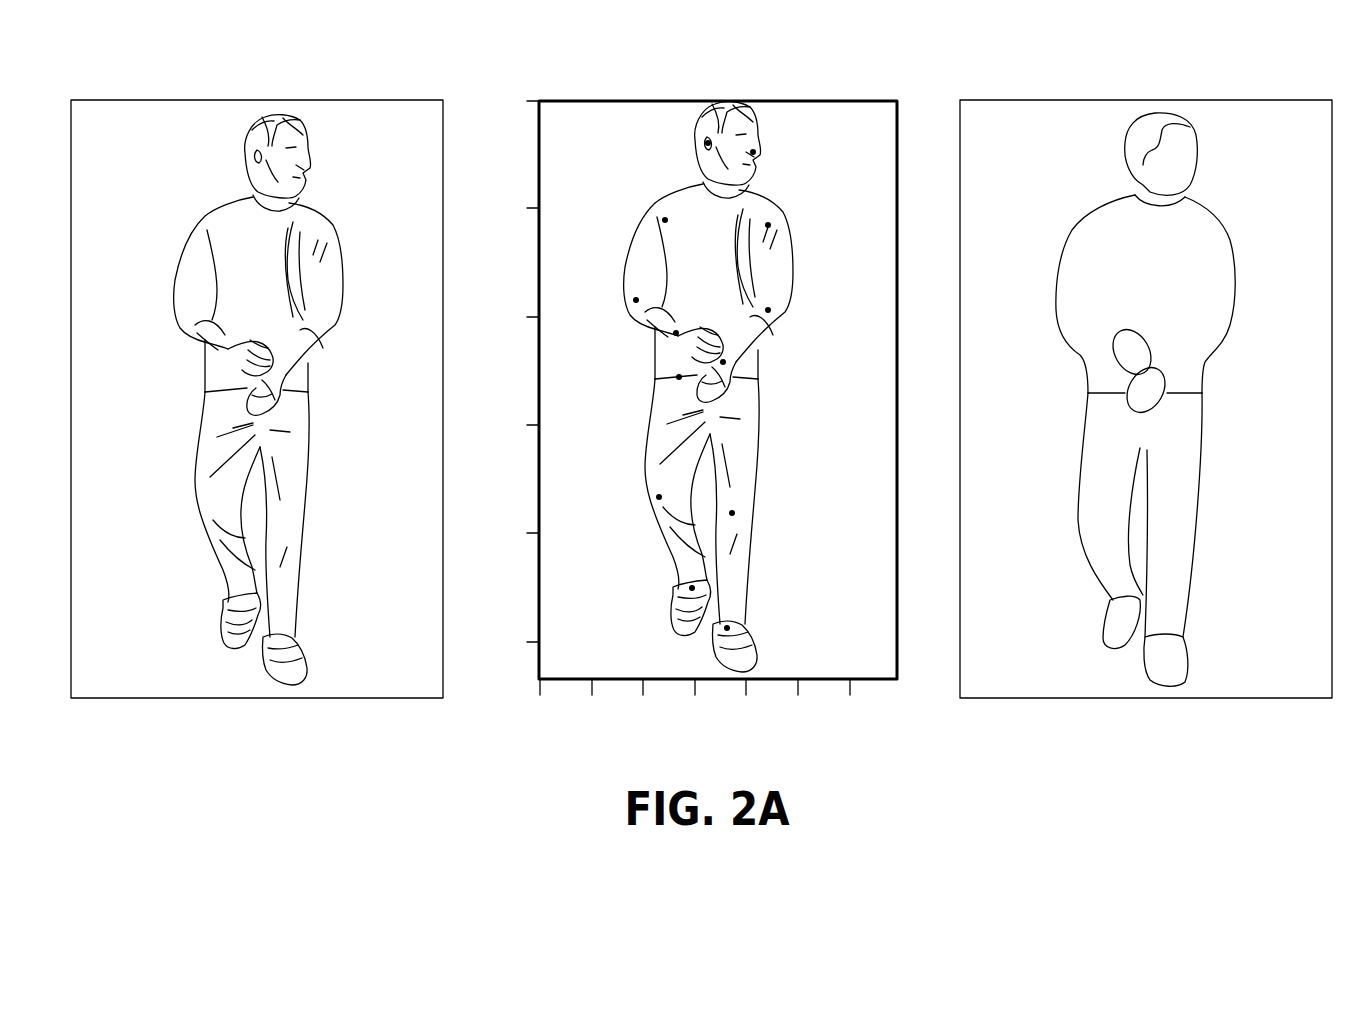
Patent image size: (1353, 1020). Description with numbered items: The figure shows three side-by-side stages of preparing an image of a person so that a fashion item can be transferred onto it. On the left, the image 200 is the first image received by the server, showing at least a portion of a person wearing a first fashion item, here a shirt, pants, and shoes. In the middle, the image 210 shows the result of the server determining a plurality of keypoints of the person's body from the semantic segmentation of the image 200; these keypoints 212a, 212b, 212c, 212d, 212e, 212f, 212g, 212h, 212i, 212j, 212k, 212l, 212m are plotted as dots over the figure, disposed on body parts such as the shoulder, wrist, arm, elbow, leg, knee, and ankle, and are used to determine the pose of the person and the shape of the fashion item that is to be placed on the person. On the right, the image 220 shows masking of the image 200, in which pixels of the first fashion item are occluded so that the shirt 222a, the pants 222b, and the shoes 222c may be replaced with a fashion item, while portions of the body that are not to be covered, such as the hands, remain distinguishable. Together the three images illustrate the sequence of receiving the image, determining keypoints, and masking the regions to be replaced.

The image 200 is at (237, 70).
The image 210 is at (695, 70).
The image 220 is at (1122, 70).
The keypoint 212a is at (708, 143).
The keypoint 212b is at (753, 152).
The keypoint 212c is at (665, 220).
The keypoint 212d is at (768, 225).
The keypoint 212e is at (636, 300).
The keypoint 212f is at (768, 310).
The keypoint 212g is at (676, 333).
The keypoint 212h is at (723, 362).
The keypoint 212i is at (679, 377).
The keypoint 212j is at (659, 497).
The keypoint 212k is at (732, 513).
The keypoint 212l is at (692, 588).
The keypoint 212m is at (727, 628).
The shirt 222a is at (1111, 297).
The pants 222b is at (1200, 442).
The shoes 222c is at (1172, 665).